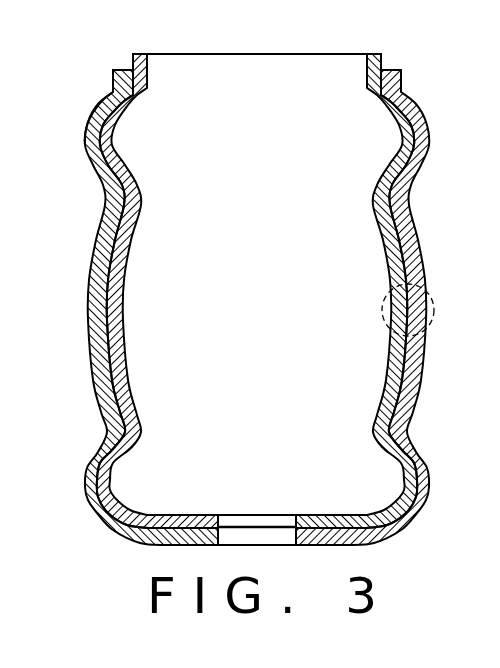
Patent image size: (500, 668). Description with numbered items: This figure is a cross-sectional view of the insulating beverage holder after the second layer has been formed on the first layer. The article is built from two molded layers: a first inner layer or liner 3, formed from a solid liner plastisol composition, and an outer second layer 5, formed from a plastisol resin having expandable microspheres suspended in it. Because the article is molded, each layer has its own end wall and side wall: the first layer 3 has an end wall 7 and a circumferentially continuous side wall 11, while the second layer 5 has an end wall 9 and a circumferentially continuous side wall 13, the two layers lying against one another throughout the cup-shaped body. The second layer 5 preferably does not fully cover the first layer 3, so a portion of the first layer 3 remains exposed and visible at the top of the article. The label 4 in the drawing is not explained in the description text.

The first inner layer 3 is at (150, 84).
The container wall section 4 is at (406, 277).
The outer second layer 5 is at (106, 98).
The end wall 7 is at (198, 514).
The end wall 9 is at (200, 546).
The side wall 11 is at (121, 292).
The side wall 13 is at (88, 308).